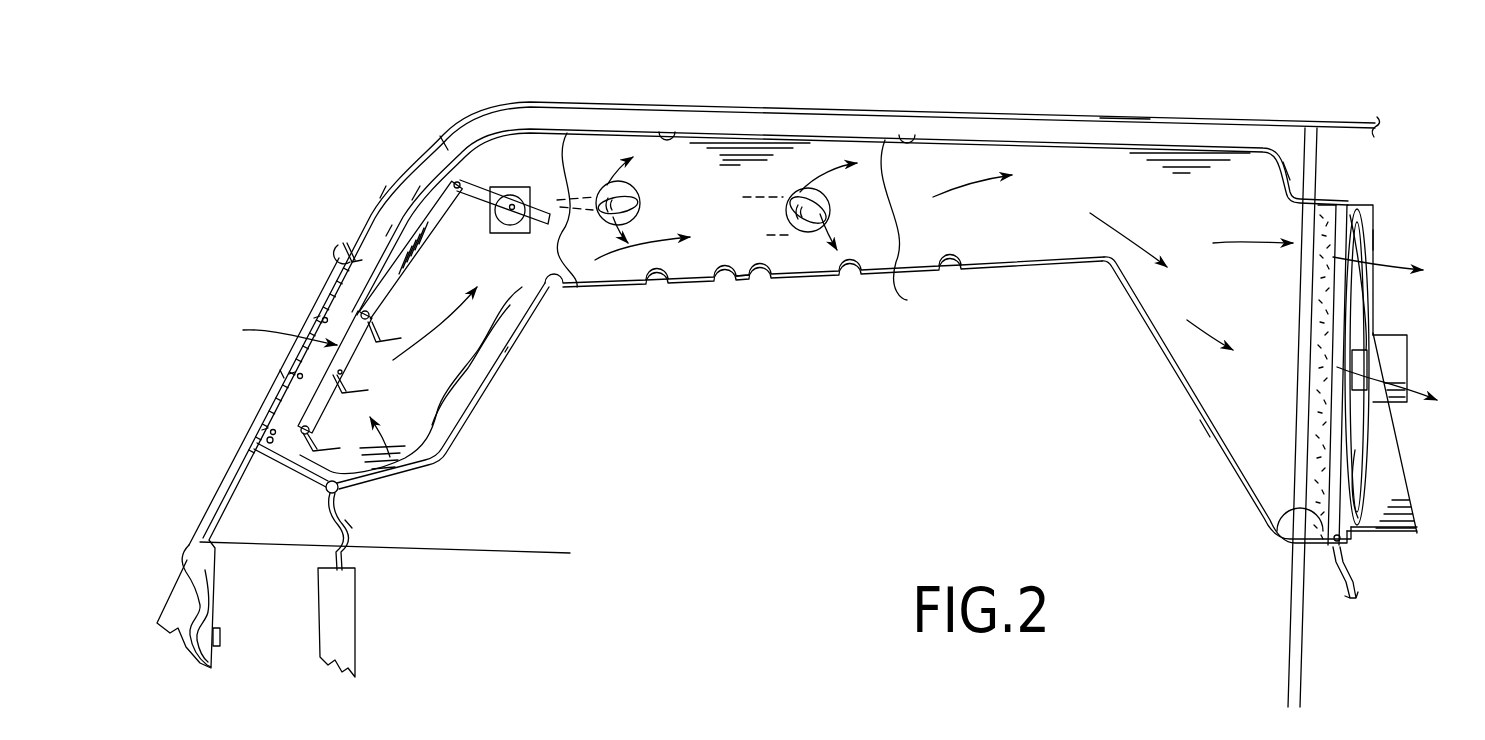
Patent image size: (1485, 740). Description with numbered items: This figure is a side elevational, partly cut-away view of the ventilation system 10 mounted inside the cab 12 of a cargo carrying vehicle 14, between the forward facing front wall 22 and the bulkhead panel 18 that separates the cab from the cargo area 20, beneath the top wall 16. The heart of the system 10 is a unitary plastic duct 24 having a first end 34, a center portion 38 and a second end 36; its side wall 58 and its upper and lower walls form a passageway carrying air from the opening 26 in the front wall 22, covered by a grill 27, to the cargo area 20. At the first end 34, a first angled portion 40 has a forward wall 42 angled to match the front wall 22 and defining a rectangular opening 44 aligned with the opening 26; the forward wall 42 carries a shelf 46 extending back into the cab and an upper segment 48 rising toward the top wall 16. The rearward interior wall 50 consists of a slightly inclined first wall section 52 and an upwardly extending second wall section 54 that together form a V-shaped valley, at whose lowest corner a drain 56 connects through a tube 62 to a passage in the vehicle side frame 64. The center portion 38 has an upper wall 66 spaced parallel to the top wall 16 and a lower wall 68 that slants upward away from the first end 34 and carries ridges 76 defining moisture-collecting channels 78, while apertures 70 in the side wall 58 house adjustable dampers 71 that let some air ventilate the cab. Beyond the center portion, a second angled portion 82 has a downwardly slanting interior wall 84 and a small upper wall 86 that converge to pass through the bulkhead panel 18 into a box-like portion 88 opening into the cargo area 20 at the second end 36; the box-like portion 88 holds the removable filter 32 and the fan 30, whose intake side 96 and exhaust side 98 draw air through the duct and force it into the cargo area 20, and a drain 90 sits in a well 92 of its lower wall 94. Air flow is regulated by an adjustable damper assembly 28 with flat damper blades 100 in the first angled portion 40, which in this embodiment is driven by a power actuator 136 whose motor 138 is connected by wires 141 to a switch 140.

The ventilation system 10 is at (512, 492).
The cab 12 is at (892, 459).
The cargo carrying vehicle 14 is at (773, 97).
The top wall 16 is at (1125, 112).
The bulkhead panel 18 is at (1312, 155).
The cargo area 20 is at (1460, 360).
The front wall 22 is at (400, 213).
The duct 24 is at (598, 455).
The opening 26 is at (335, 307).
The grill 27 is at (267, 407).
The adjustable damper assembly 28 is at (405, 440).
The fan 30 is at (1368, 298).
The filter 32 is at (1327, 227).
The first end 34 is at (277, 373).
The second end 36 is at (1413, 481).
The center portion 38 is at (817, 276).
The first angled portion 40 is at (417, 180).
The forward wall 42 is at (384, 187).
The rectangular opening 44 is at (330, 283).
The shelf 46 is at (345, 250).
The upper segment 48 is at (442, 152).
The interior wall 50 is at (515, 348).
The first wall section 52 is at (307, 477).
The second wall section 54 is at (497, 373).
The drain 56 is at (317, 513).
The side wall 58 is at (676, 175).
The tube 62 is at (347, 524).
The side frame 64 is at (333, 633).
The upper wall 66 is at (968, 132).
The lower wall 68 is at (948, 270).
The apertures 70 is at (642, 240).
The adjustable dampers 71 is at (642, 240).
The ridges 76 is at (657, 290).
The channels 78 is at (745, 282).
The second angled portion 82 is at (1215, 462).
The interior wall 84 is at (1172, 357).
The upper wall 86 is at (1287, 165).
The box-like portion 88 is at (1328, 205).
The drain 90 is at (1347, 548).
The well 92 is at (1278, 538).
The lower wall 94 is at (1318, 548).
The intake side 96 is at (1340, 342).
The exhaust side 98 is at (1375, 243).
The damper blades 100 is at (408, 302).
The power actuator 136 is at (487, 180).
The motor 138 is at (512, 205).
The switch 140 is at (222, 633).
The wires 141 is at (230, 493).